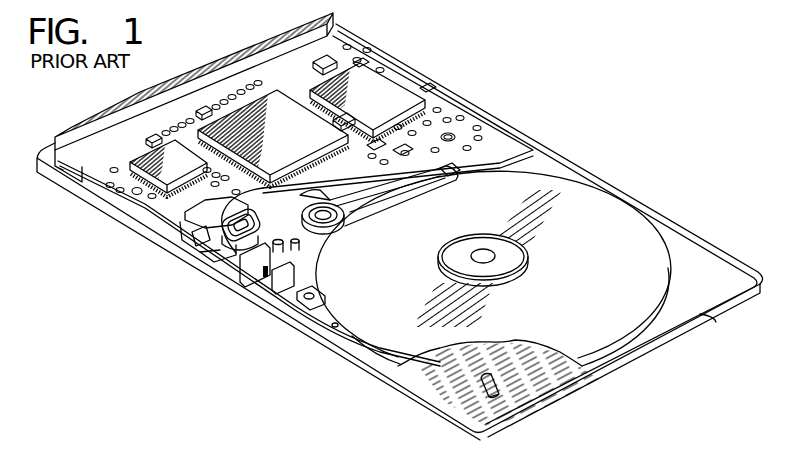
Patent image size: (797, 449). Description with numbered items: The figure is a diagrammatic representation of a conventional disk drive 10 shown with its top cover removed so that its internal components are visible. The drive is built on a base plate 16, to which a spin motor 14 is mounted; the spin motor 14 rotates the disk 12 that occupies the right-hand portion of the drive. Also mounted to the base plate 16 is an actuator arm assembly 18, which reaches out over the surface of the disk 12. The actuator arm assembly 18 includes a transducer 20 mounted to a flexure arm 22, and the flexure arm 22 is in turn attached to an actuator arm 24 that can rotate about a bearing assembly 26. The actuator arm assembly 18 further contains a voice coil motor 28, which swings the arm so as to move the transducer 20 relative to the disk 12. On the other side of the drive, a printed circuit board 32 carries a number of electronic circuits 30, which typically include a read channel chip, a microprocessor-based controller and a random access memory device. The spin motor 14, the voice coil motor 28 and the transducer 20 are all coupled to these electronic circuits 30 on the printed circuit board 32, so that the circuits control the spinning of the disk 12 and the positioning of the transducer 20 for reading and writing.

The disk drive 10 is at (522, 114).
The disk 12 is at (597, 299).
The spin motor 14 is at (512, 263).
The base plate 16 is at (688, 261).
The actuator arm assembly 18 is at (426, 202).
The transducer 20 is at (452, 172).
The flexure arm 22 is at (392, 202).
The actuator arm 24 is at (324, 218).
The bearing assembly 26 is at (310, 225).
The voice coil motor 28 is at (222, 242).
The electronic circuits 30 is at (384, 109).
The printed circuit board 32 is at (293, 78).